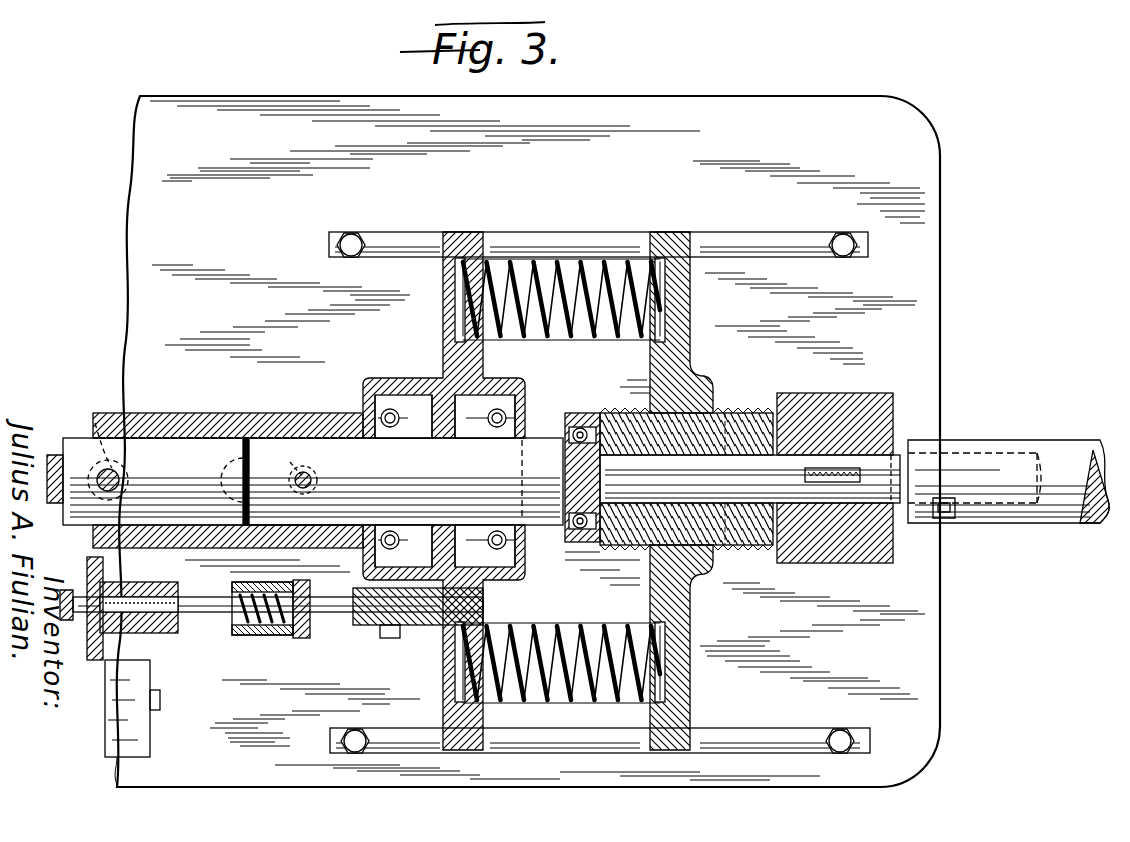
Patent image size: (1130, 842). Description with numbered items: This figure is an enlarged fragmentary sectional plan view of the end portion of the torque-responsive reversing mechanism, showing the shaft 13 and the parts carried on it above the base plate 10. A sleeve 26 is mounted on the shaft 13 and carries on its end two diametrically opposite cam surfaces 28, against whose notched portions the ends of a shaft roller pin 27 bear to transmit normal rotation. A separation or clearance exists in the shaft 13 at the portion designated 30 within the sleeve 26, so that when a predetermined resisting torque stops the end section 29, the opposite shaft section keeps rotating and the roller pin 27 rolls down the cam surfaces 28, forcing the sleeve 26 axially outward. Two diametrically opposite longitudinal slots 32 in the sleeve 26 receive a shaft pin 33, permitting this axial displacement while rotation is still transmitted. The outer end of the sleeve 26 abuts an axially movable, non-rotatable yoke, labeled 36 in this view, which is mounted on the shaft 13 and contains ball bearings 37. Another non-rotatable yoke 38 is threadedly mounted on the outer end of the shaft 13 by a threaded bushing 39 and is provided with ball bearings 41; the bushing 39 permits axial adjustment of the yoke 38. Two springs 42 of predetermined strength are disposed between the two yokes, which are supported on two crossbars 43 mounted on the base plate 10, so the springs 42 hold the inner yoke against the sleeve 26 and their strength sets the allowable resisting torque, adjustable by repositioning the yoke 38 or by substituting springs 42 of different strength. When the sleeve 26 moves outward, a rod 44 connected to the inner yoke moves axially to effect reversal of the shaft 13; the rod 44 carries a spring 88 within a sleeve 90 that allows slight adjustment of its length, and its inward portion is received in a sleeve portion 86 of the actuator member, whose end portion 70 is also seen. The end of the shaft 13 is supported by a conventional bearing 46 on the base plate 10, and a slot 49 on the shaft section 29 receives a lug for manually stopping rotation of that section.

The base plate 10 is at (935, 160).
The shaft 13 is at (903, 445).
The sleeve 26 is at (150, 438).
The shaft roller pin 27 is at (125, 475).
The cam surfaces 28 is at (95, 423).
The end section of the shaft 29 is at (322, 438).
The separation or clearance portion of the shaft 30 is at (246, 438).
The longitudinal slots 32 is at (286, 458).
The shaft pin 33 is at (316, 476).
The hub 36 is at (190, 414).
The ball bearings 37 is at (392, 408).
The yoke 38 is at (700, 378).
The threaded bushing 39 is at (720, 414).
The ball bearings 41 is at (580, 427).
The springs 42 is at (535, 272).
The crossbars 43 is at (735, 236).
The rod 44 is at (208, 612).
The bearing 46 is at (868, 394).
The slot 49 is at (845, 484).
The end portion of the actuator member 70 is at (128, 738).
The sleeve portion 86 is at (160, 633).
The spring 88 is at (258, 635).
The sleeve 90 is at (300, 638).